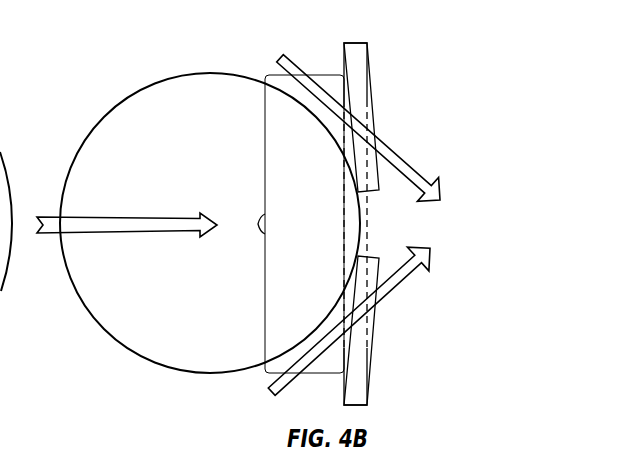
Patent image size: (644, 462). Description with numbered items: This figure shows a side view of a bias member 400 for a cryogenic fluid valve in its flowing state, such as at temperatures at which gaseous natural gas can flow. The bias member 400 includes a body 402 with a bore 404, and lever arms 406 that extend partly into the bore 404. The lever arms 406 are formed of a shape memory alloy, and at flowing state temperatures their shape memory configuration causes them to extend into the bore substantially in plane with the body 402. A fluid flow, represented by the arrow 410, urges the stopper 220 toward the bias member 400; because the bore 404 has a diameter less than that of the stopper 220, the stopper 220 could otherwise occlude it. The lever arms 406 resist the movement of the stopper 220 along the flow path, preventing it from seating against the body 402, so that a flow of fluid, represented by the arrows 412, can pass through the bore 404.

The stopper 220 is at (202, 188).
The bias member 400 is at (331, 37).
The body 402 is at (344, 192).
The bore 404 is at (132, 155).
The lever arms 406 is at (374, 128).
The arrow 410 is at (134, 232).
The arrows 412 is at (422, 176).